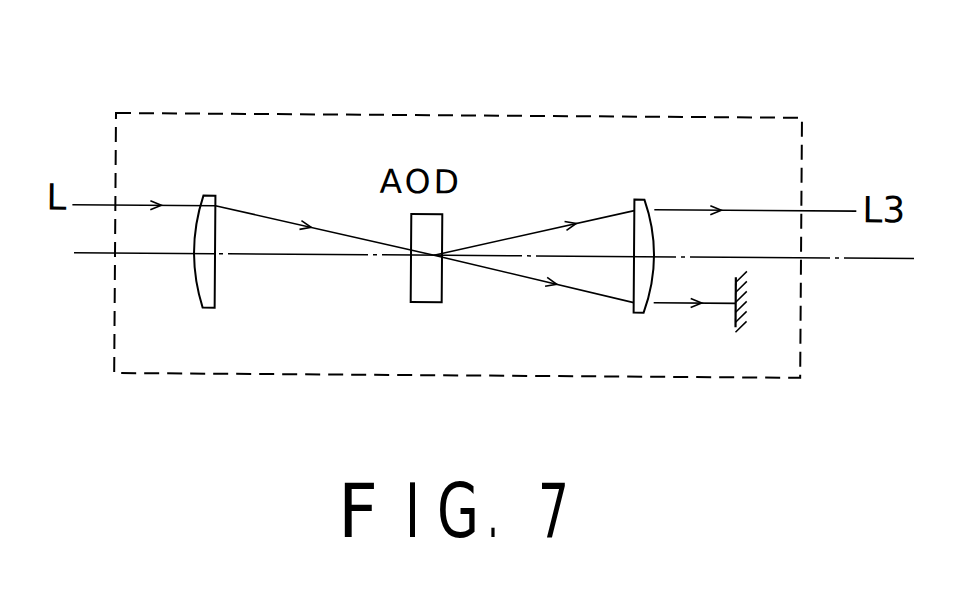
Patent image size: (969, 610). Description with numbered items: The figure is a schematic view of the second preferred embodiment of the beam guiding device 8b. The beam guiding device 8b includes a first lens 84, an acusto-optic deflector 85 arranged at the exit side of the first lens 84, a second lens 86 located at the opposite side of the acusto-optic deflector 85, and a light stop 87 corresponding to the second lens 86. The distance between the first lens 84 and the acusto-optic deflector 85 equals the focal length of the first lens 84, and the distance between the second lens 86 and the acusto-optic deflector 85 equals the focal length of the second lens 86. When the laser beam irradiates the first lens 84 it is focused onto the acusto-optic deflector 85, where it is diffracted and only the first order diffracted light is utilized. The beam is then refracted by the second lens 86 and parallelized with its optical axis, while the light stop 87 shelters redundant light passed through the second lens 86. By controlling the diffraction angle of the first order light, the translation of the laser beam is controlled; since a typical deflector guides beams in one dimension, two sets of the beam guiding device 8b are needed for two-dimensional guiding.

The beam guiding device 8b is at (403, 113).
The first lens 84 is at (215, 197).
The acusto-optic deflector 85 is at (420, 288).
The second lens 86 is at (645, 202).
The light stop 87 is at (737, 323).